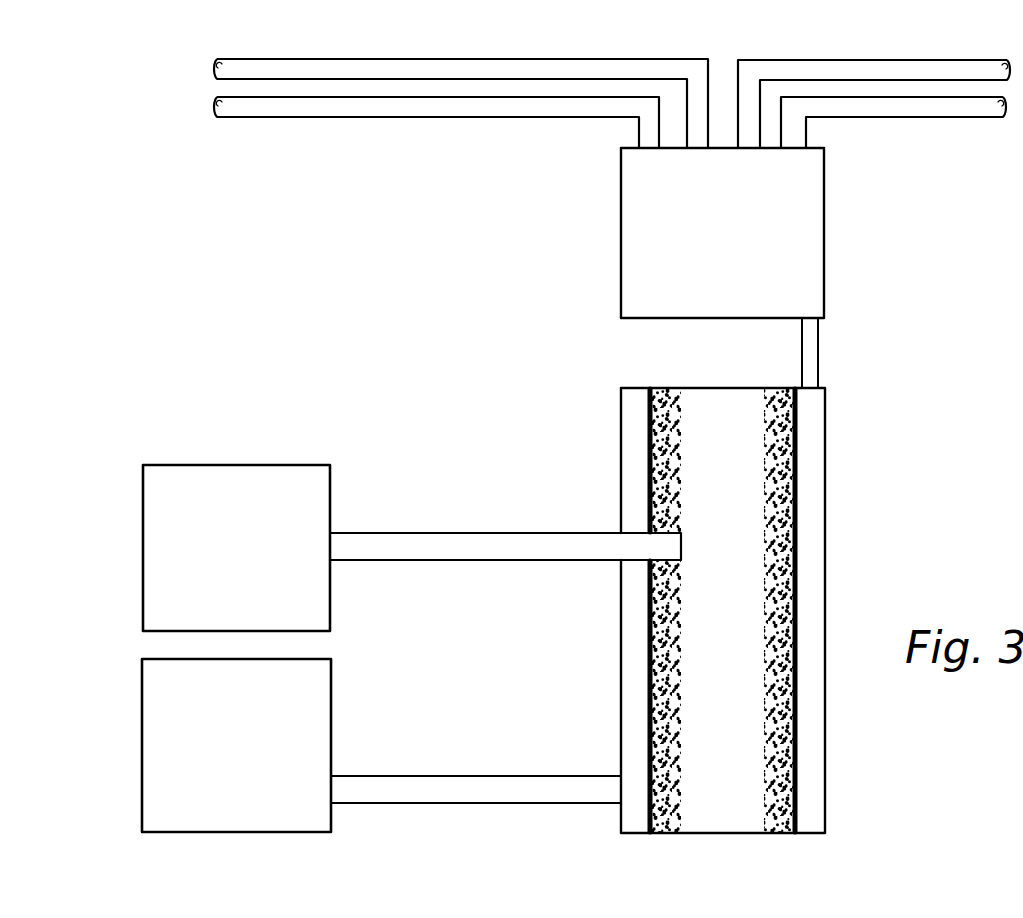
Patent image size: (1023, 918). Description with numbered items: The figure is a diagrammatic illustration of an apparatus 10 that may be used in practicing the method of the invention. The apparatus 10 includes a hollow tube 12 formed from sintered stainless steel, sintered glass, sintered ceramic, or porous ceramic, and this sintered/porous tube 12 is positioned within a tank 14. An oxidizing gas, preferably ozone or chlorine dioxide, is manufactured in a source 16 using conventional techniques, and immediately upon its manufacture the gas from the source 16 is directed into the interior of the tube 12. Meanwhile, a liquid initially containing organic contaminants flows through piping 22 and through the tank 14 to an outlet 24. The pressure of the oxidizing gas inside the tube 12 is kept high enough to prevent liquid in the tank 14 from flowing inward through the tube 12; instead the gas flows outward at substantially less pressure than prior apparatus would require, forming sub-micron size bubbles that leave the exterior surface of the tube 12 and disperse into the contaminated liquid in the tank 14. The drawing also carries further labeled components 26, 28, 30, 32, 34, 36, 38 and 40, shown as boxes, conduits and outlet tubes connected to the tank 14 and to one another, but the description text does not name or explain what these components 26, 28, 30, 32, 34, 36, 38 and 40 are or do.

The apparatus 10 is at (234, 252).
The hollow tube 12 is at (762, 489).
The tank 14 is at (620, 436).
The source 16 is at (647, 491).
The piping 22 is at (142, 753).
The outlet 24 is at (470, 776).
The controller 26 is at (212, 465).
The conduit 28 is at (470, 532).
The gas separator 30 is at (826, 258).
The outlet conduit 32 is at (802, 345).
The outlet tube 34 is at (437, 118).
The outlet tube 36 is at (401, 59).
The outlet tube 38 is at (836, 60).
The outlet tube 40 is at (870, 118).